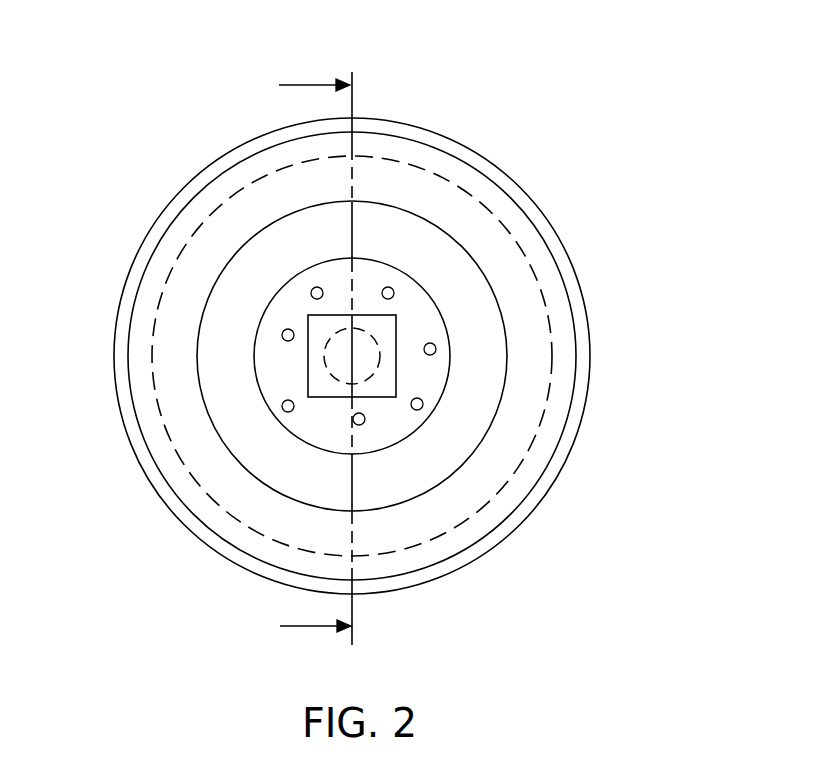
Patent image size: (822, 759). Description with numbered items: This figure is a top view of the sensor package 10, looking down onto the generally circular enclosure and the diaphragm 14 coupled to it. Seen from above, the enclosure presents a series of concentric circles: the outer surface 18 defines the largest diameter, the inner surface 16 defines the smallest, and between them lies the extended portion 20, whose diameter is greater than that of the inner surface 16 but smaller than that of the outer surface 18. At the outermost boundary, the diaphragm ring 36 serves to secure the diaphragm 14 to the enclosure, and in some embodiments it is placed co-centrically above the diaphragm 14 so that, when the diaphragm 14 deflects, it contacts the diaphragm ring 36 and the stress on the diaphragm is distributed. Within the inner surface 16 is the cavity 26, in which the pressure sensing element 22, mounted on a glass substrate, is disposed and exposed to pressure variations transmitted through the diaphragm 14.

The sensor package 10 is at (642, 63).
The diaphragm 14 is at (558, 298).
The inner surface 16 is at (445, 392).
The outer surface 18 is at (507, 345).
The extended portion 20 is at (217, 505).
The pressure sensing element 22 is at (320, 313).
The cavity 26 is at (320, 365).
The diaphragm ring 36 is at (533, 212).